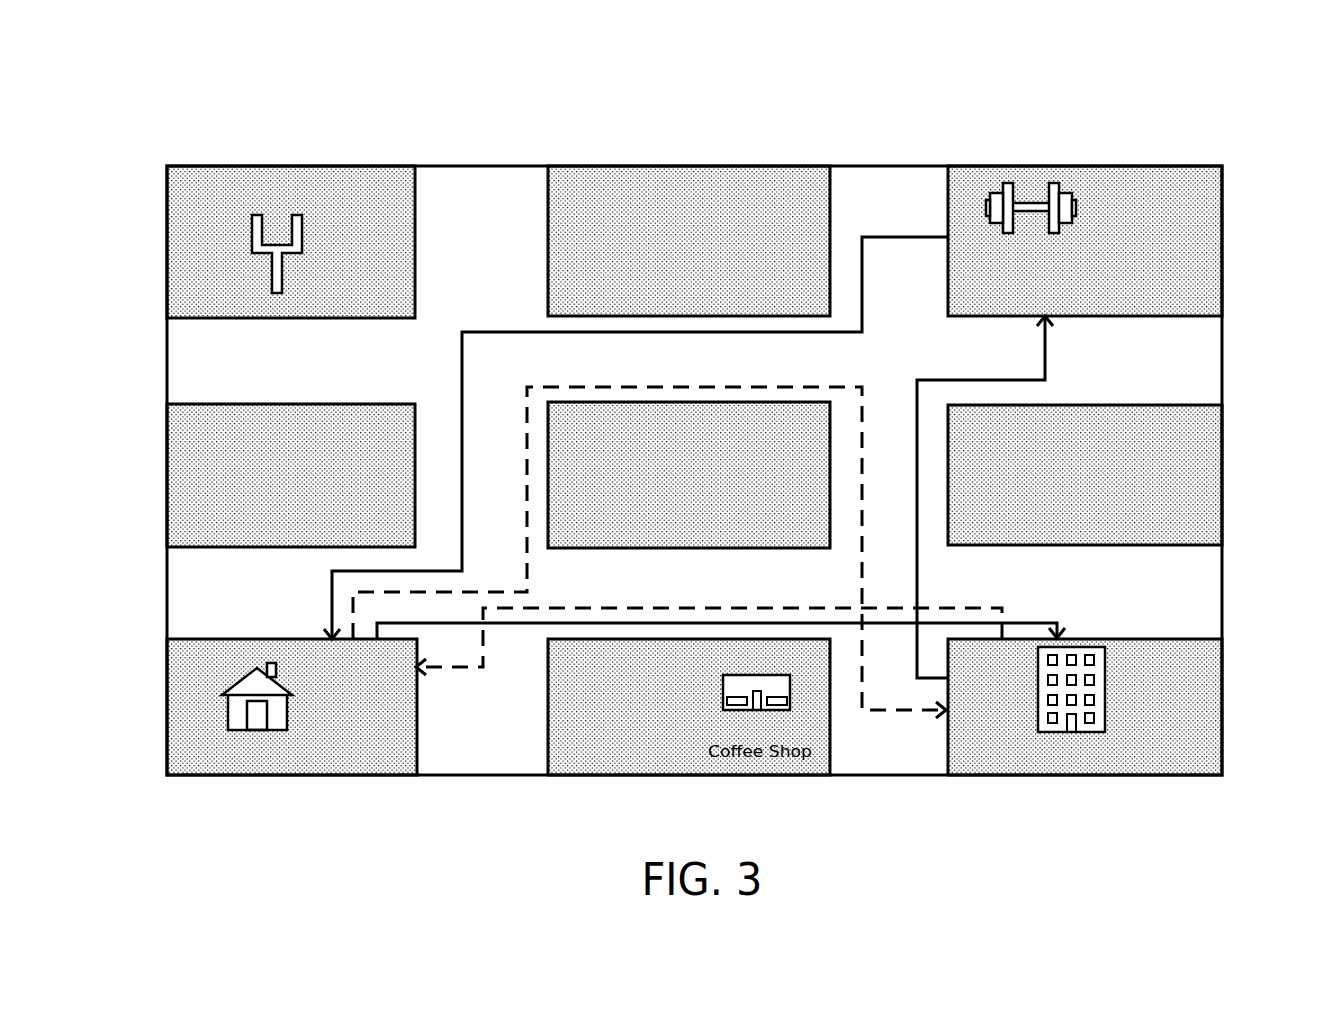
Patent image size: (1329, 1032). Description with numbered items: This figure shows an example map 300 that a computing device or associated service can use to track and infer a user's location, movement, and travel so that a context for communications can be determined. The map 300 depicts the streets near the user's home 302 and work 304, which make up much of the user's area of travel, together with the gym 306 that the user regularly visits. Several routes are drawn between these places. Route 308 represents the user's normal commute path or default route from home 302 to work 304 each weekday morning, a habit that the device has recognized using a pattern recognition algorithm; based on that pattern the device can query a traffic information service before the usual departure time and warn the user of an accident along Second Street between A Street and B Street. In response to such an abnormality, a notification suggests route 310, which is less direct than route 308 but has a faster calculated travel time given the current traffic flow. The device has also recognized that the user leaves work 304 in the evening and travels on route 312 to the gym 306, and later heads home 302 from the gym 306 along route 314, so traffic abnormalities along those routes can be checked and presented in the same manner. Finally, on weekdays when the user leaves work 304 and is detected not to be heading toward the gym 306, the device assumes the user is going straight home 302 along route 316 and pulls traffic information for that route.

The map 300 is at (1283, 208).
The home 302 is at (227, 725).
The work 304 is at (1102, 730).
The gym 306 is at (1053, 190).
The route 308 is at (1025, 622).
The route 310 is at (903, 712).
The route 312 is at (1045, 357).
The route 314 is at (888, 237).
The route 316 is at (473, 668).